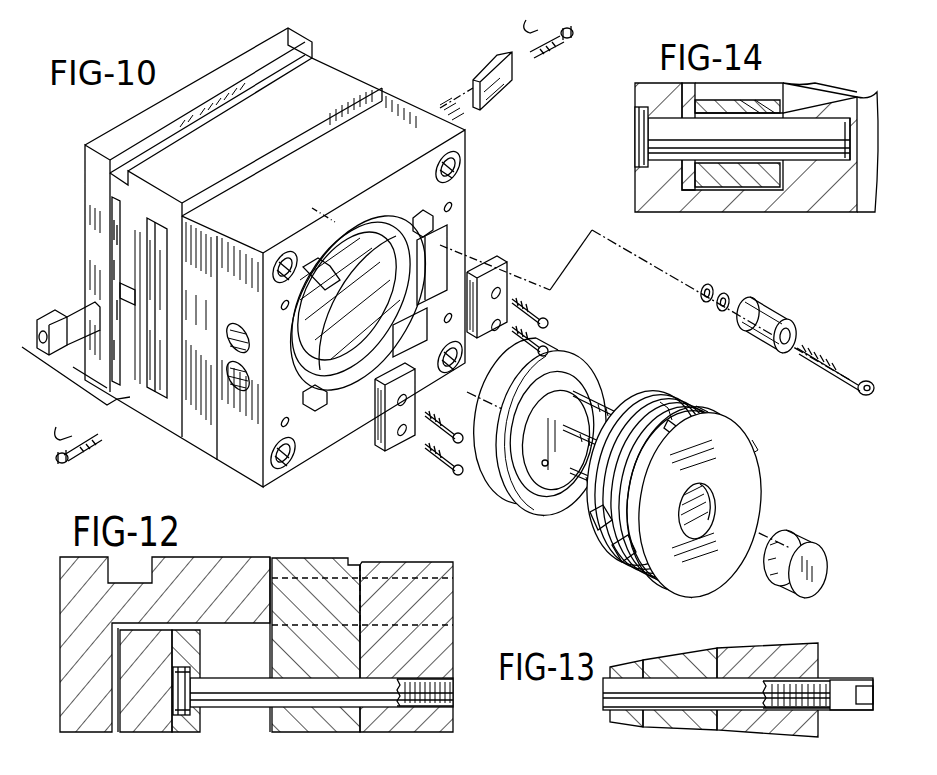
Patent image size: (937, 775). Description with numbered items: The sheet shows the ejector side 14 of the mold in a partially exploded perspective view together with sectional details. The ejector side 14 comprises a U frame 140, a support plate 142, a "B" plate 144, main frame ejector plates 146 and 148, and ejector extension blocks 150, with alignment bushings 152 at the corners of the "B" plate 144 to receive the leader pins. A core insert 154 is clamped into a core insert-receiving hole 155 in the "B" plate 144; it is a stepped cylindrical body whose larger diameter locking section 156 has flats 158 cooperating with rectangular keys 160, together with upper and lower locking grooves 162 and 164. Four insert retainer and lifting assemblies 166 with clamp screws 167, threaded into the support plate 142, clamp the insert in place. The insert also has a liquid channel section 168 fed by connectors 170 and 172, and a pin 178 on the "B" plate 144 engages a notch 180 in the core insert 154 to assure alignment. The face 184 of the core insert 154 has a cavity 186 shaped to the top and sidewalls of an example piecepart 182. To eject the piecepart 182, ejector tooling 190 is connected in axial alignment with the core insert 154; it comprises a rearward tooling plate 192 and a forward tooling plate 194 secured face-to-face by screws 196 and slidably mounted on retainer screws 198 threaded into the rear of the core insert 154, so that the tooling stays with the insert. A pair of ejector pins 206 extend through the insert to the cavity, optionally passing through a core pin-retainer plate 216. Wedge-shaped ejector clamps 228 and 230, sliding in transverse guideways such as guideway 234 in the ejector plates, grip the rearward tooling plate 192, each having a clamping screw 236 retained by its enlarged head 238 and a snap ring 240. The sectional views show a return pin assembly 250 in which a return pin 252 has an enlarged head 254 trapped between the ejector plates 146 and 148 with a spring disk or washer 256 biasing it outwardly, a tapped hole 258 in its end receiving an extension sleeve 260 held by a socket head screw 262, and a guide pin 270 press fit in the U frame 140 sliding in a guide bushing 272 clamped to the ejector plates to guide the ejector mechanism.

In FIG. 10, the ejector side 14 is at (362, 58).
In FIG. 10, the U frame 140 is at (260, 54).
In FIG. 12, the U frame 140 is at (214, 568).
In FIG. 14, the U frame 140 is at (636, 208).
In FIG. 10, the support plate 142 is at (392, 90).
In FIG. 12, the support plate 142 is at (331, 560).
In FIG. 13, the support plate 142 is at (677, 660).
In FIG. 14, the support plate 142 is at (867, 105).
In FIG. 10, the "B" plate 144 is at (422, 116).
In FIG. 12, the "B" plate 144 is at (406, 562).
In FIG. 13, the "B" plate 144 is at (757, 652).
In FIG. 10, the main frame ejector plate 146 is at (110, 225).
In FIG. 12, the main frame ejector plate 146 is at (130, 725).
In FIG. 14, the main frame ejector plate 146 is at (707, 200).
In FIG. 10, the main frame ejector plate 148 is at (148, 228).
In FIG. 12, the main frame ejector plate 148 is at (192, 650).
In FIG. 14, the main frame ejector plate 148 is at (768, 190).
In FIG. 10, the ejector extension blocks 150 is at (84, 258).
In FIG. 10, the alignment bushings 152 is at (466, 165).
In FIG. 10, the core insert 154 is at (748, 412).
In FIG. 10, the core insert-receiving bore or hole 155 is at (348, 385).
In FIG. 10, the locking section 156 is at (725, 406).
In FIG. 10, the flats 158 is at (624, 558).
In FIG. 10, the rectangular keys 160 is at (509, 270).
In FIG. 10, the upper locking groove 162 is at (302, 352).
In FIG. 10, the lower locking groove 164 is at (447, 247).
In FIG. 10, the insert retainer and lifting assemblies 166 is at (778, 300).
In FIG. 10, the clamp screws 167 is at (843, 367).
In FIG. 10, the liquid channel section 168 is at (600, 524).
In FIG. 10, the connector 170 is at (238, 324).
In FIG. 10, the connector 172 is at (236, 362).
In FIG. 10, the pin 178 is at (332, 196).
In FIG. 10, the notch 180 is at (668, 420).
In FIG. 10, the piecepart 182 is at (806, 540).
In FIG. 10, the face 184 is at (706, 560).
In FIG. 10, the cavity 186 is at (716, 492).
In FIG. 10, the ejector tooling 190 is at (614, 352).
In FIG. 10, the rearward tooling plate 192 is at (496, 416).
In FIG. 10, the forward tooling plate 194 is at (542, 488).
In FIG. 10, the screws 196 is at (508, 472).
In FIG. 10, the retainer screws 198 is at (590, 362).
In FIG. 10, the ejector pins 206 is at (524, 372).
In FIG. 10, the core pin-retainer plate 216 is at (628, 392).
In FIG. 10, the ejector clamp 228 is at (508, 92).
In FIG. 10, the ejector clamp 230 is at (72, 328).
In FIG. 10, the guideway 234 is at (130, 283).
In FIG. 10, the clamping screw 236 is at (95, 445).
In FIG. 10, the enlarged head 238 is at (64, 465).
In FIG. 10, the snap ring 240 is at (56, 427).
In FIG. 12, the return pin assembly 250 is at (250, 716).
In FIG. 10, the return pin 252 is at (453, 205).
In FIG. 12, the return pin 252 is at (378, 700).
In FIG. 13, the return pin 252 is at (684, 706).
In FIG. 12, the enlarged head 254 is at (183, 718).
In FIG. 12, the spring disk or washer 256 is at (190, 673).
In FIG. 12, the tapped holes 258 is at (456, 698).
In FIG. 13, the extension sleeve 260 is at (836, 680).
In FIG. 13, the socket head screw 262 is at (848, 712).
In FIG. 14, the guide pin 270 is at (832, 150).
In FIG. 14, the guide bushing 272 is at (782, 110).